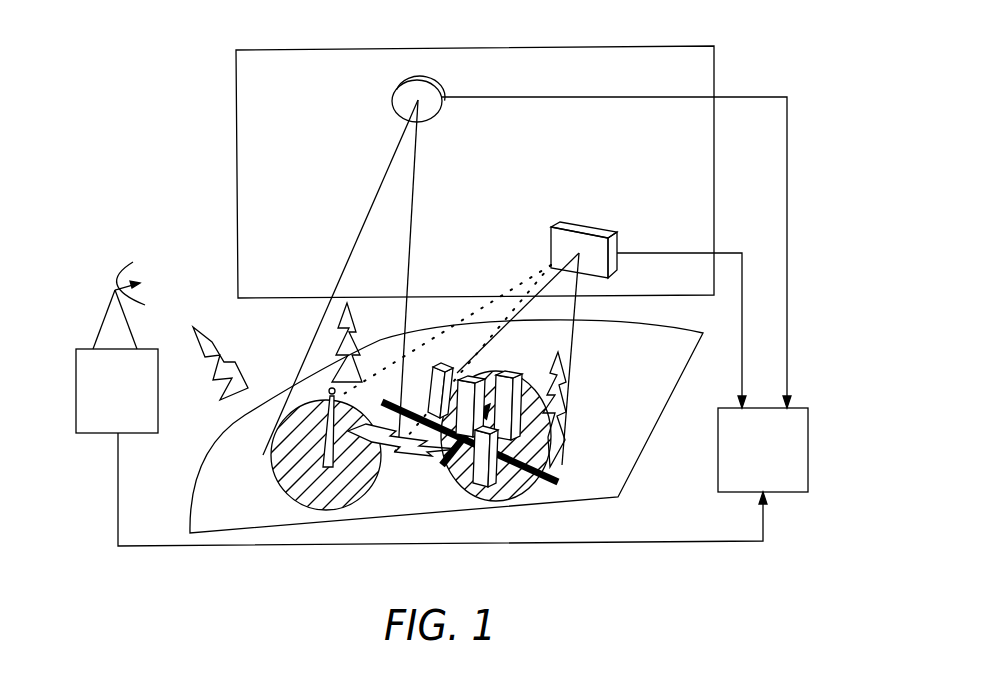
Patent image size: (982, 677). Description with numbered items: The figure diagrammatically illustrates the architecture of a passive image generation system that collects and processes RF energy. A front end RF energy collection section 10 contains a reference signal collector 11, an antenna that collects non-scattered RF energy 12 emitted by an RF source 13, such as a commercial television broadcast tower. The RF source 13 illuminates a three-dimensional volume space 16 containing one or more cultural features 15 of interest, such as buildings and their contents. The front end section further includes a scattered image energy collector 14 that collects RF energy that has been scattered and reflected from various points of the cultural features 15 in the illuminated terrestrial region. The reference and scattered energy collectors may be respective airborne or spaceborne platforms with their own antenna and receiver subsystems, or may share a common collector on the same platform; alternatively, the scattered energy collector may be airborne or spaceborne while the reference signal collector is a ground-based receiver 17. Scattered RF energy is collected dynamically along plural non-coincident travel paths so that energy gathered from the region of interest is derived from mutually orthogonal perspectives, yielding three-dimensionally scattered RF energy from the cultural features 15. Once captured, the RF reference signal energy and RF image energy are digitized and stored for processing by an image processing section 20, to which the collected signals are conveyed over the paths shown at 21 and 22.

The RF energy collection section 10 is at (477, 48).
The reference signal collector 11 is at (428, 77).
The non-scattered RF energy 12 is at (350, 312).
The RF source 13 is at (312, 472).
The scattered image energy collector 14 is at (586, 227).
The cultural features 15 is at (474, 482).
The three-dimensional volume space 16 is at (522, 490).
The ground-based receiver 17 is at (76, 364).
The image processing section 20 is at (808, 448).
The signal line from second sensor 21 is at (742, 362).
The signal line from first sensor 22 is at (787, 364).